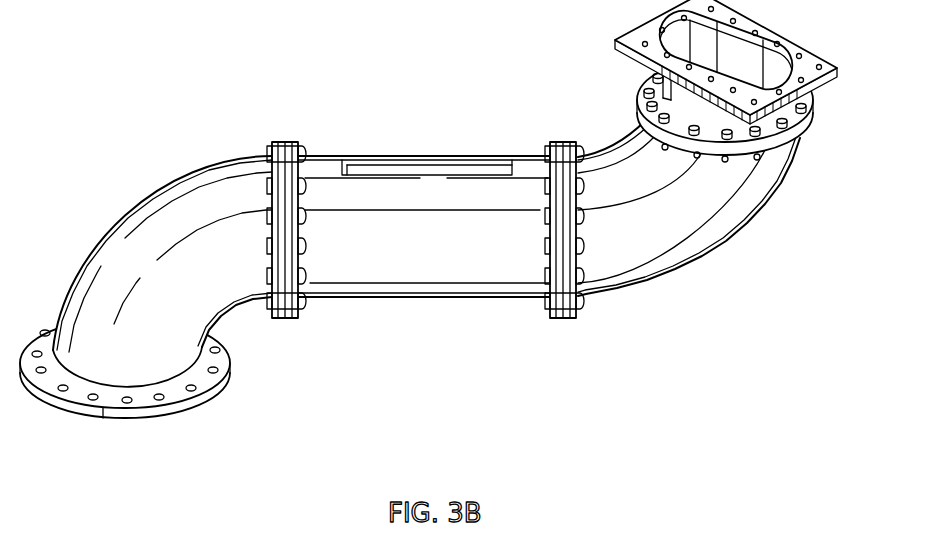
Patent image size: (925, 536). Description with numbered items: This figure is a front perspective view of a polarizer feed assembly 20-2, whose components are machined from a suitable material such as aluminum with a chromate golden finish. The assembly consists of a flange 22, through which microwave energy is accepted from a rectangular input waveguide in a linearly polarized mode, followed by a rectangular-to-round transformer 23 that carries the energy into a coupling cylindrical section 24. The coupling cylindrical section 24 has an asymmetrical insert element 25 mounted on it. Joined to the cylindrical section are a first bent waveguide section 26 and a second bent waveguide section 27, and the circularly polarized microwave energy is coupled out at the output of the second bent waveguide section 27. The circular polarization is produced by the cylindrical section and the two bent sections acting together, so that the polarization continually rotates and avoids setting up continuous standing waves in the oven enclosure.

The polarizer feed assembly 20-2 is at (251, 53).
The flange 22 is at (822, 63).
The rectangular-to-round transformer 23 is at (808, 112).
The coupling cylindrical section 24 is at (363, 157).
The asymmetrical insert element 25 is at (457, 172).
The first bent waveguide section 26 is at (720, 247).
The second bent waveguide section 27 is at (97, 237).